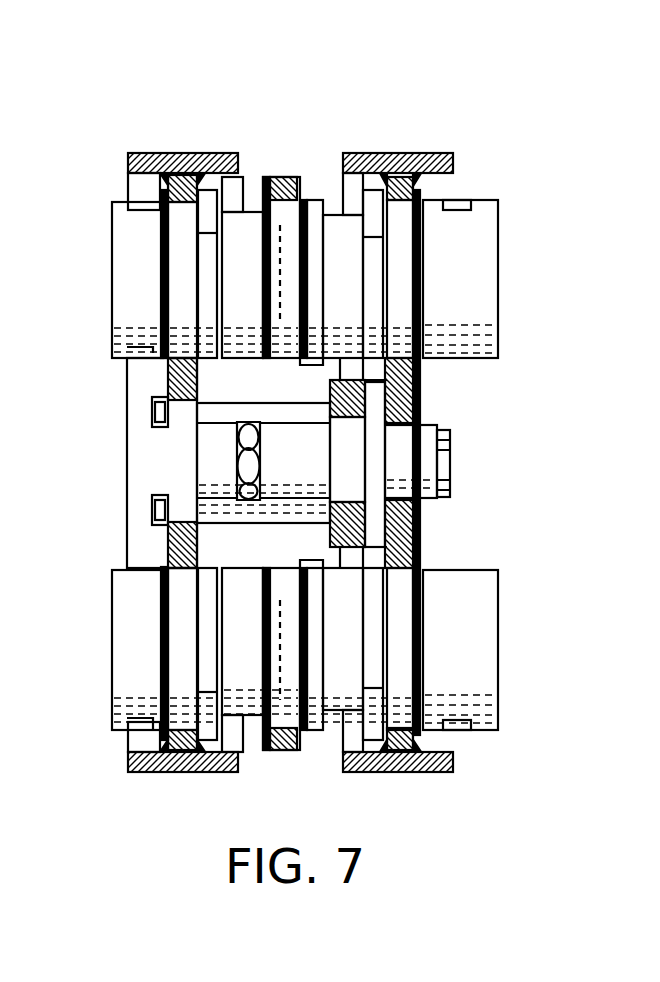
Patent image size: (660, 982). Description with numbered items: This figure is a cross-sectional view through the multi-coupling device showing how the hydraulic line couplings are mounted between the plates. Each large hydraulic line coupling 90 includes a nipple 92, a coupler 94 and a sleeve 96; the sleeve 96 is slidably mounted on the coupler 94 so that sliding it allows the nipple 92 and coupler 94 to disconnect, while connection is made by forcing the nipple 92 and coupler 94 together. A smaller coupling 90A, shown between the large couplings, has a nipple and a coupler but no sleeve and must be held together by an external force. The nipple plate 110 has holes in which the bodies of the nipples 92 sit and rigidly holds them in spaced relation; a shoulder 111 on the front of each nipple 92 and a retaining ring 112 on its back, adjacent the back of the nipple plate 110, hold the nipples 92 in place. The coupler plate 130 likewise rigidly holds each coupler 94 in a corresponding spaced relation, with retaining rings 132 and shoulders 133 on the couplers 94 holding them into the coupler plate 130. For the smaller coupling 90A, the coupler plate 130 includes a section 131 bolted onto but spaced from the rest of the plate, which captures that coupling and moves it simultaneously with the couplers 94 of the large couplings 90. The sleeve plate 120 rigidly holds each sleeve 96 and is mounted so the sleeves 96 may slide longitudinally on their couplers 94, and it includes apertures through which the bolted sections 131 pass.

The hydraulic line coupling 90 is at (334, 430).
The smaller coupling 90A is at (366, 462).
The nipple 92 is at (483, 232).
The coupler 94 is at (123, 262).
The sleeve 96 is at (313, 200).
The nipple plate 110 is at (415, 153).
The shoulder 111 is at (372, 153).
The retaining ring 112 is at (423, 190).
The sleeve plate 120 is at (283, 178).
The coupler plate 130 is at (175, 153).
The bolted section 131 is at (415, 383).
The retaining ring 132 is at (165, 305).
The shoulder 133 is at (207, 202).